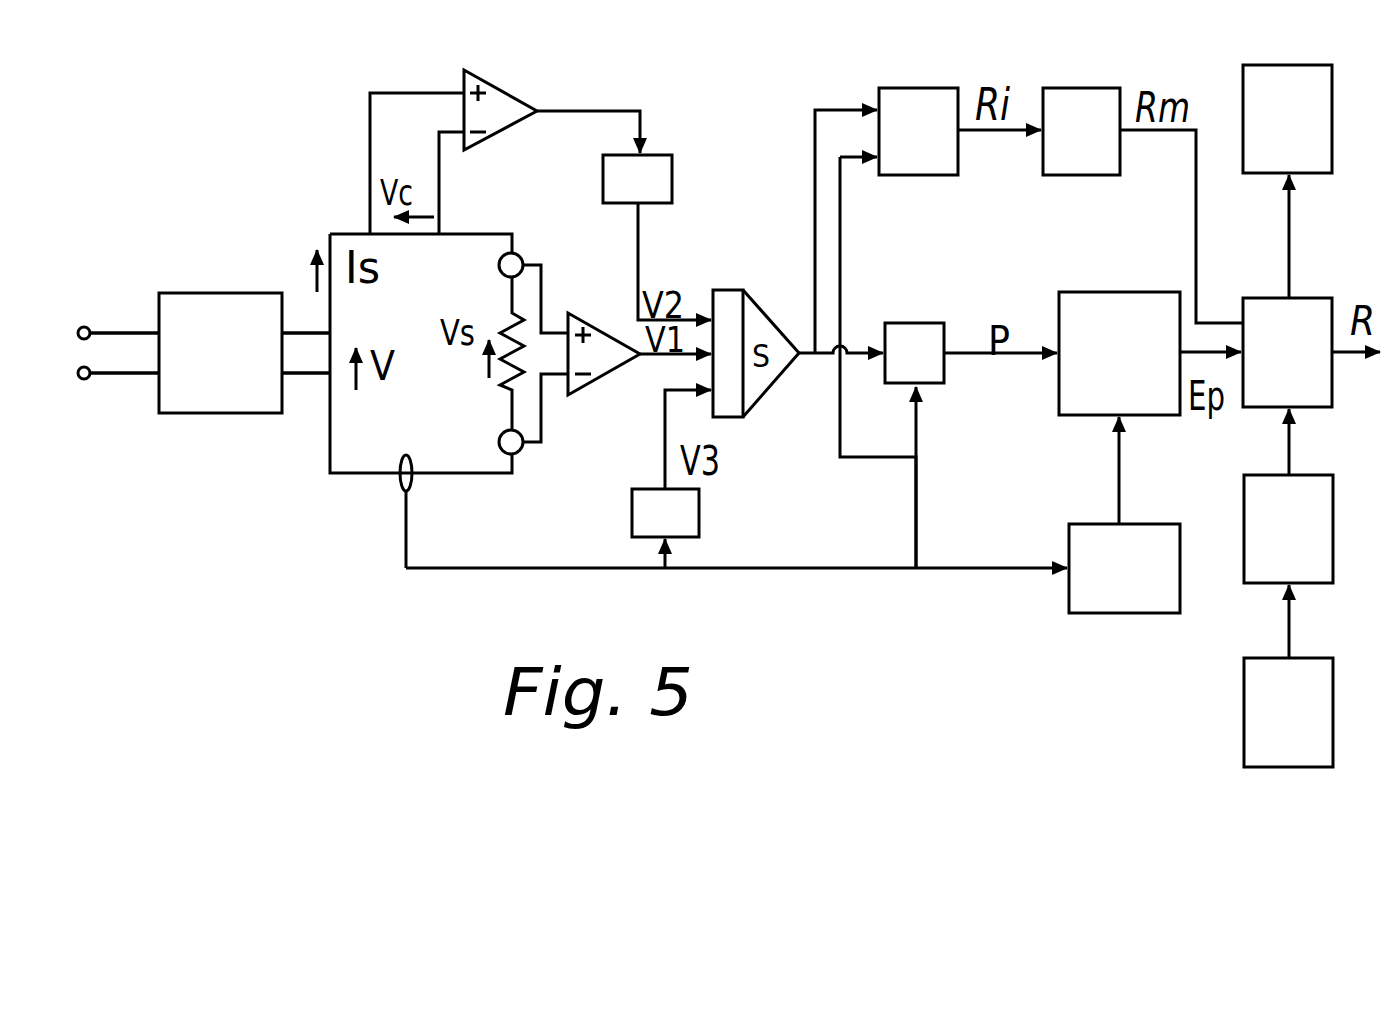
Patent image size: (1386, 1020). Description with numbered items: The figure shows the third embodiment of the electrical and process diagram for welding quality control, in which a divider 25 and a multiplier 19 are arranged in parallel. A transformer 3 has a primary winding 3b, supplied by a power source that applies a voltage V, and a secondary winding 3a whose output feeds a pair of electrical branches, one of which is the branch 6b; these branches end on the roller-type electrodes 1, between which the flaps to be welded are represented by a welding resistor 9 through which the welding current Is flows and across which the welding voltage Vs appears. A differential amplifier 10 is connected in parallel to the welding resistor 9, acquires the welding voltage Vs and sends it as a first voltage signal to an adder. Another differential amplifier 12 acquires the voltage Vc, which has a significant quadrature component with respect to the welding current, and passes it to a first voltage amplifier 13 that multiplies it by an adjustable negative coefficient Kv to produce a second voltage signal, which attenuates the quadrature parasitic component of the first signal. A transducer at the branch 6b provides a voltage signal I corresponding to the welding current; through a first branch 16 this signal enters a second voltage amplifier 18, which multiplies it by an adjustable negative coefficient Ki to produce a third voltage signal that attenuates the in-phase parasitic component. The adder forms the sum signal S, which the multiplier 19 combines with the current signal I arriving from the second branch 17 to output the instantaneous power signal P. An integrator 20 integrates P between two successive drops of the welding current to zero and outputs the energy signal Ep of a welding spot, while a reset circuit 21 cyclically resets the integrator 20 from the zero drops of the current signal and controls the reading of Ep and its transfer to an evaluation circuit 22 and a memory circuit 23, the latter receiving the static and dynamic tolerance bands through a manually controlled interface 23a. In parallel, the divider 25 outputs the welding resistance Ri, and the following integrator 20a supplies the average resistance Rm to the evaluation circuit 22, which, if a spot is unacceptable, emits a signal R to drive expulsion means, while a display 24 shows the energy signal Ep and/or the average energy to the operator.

The roller-type electrodes 1 is at (532, 247).
The transformer 3 is at (204, 353).
The secondary winding 3a is at (315, 390).
The primary winding 3b is at (136, 387).
The electrical branch 6b is at (372, 487).
The welding resistor 9 is at (508, 383).
The differential amplifier 10 is at (603, 358).
The differential amplifier 12 is at (500, 105).
The first voltage amplifier 13 is at (660, 177).
The first branch 16 is at (678, 560).
The second branch 17 is at (775, 568).
The second voltage amplifier 18 is at (699, 505).
The multiplier 19 is at (923, 338).
The integrator 20 is at (1119, 353).
The integrator 20a is at (1081, 131).
The reset circuit 21 is at (1124, 568).
The evaluation circuit 22 is at (1287, 352).
The memory circuit 23 is at (1288, 529).
The interface 23a is at (1288, 712).
The display 24 is at (1287, 119).
The divider 25 is at (918, 131).